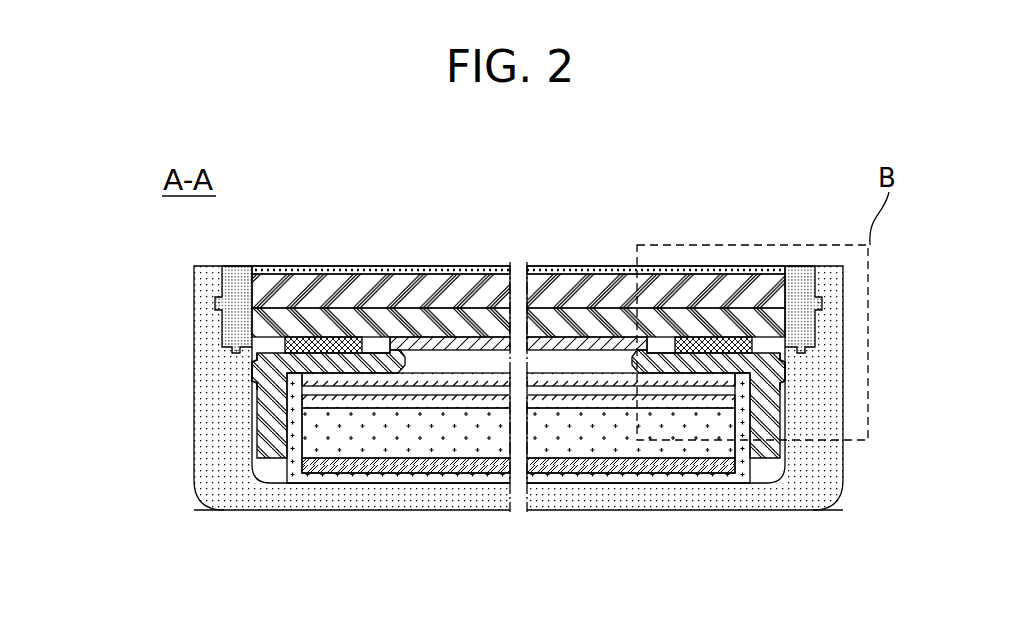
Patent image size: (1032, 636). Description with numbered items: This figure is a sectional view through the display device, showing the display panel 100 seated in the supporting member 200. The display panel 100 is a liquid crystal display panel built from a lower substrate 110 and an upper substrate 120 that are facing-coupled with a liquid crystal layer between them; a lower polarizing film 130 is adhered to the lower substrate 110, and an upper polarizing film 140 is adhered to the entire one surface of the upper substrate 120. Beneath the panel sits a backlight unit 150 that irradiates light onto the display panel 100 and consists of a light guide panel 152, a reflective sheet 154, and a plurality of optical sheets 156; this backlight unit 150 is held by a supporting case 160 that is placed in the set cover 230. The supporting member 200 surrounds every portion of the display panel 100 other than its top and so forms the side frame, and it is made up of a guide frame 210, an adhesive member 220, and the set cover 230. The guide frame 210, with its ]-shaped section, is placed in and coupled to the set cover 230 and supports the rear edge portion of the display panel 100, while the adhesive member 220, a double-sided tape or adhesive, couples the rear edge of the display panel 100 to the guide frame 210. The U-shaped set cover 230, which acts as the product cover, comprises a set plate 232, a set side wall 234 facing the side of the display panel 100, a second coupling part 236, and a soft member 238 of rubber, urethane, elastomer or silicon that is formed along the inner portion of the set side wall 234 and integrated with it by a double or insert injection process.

The display panel 100 is at (518, 258).
The lower substrate 110 is at (444, 320).
The upper substrate 120 is at (403, 298).
The lower polarizing film 130 is at (518, 279).
The upper polarizing film 140 is at (361, 270).
The backlight unit 150 is at (518, 487).
The light guide panel 152 is at (600, 447).
The reflective sheet 154 is at (648, 467).
The optical sheets 156 is at (568, 398).
The supporting case 160 is at (449, 477).
The supporting member 200 is at (202, 583).
The guide frame 210 is at (267, 452).
The adhesive member 220 is at (323, 353).
The set cover 230 is at (200, 497).
The set plate 232 is at (372, 498).
The set side wall 234 is at (205, 399).
The second coupling part 236 is at (258, 372).
The soft member 238 is at (230, 326).